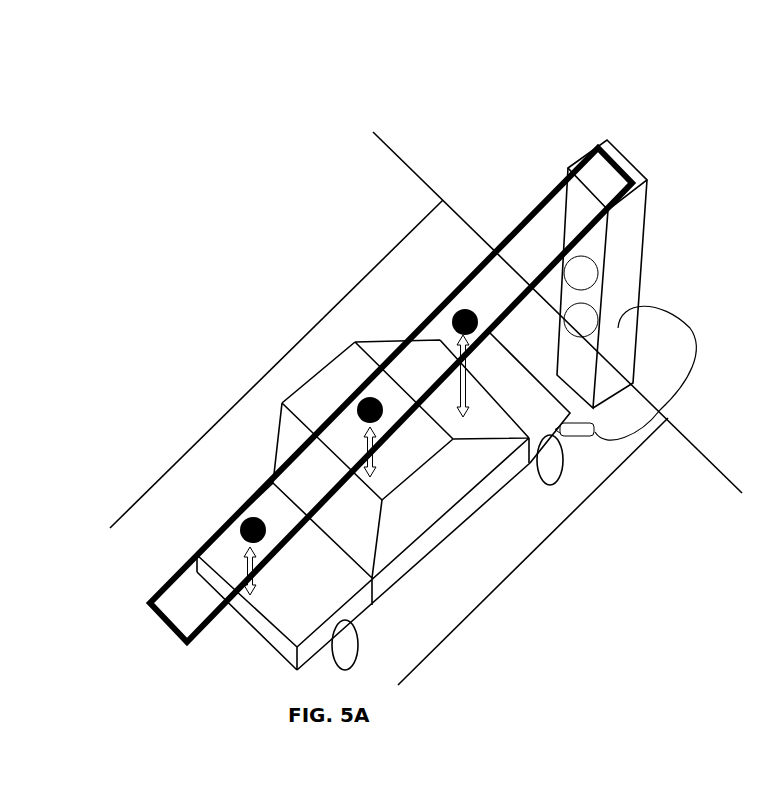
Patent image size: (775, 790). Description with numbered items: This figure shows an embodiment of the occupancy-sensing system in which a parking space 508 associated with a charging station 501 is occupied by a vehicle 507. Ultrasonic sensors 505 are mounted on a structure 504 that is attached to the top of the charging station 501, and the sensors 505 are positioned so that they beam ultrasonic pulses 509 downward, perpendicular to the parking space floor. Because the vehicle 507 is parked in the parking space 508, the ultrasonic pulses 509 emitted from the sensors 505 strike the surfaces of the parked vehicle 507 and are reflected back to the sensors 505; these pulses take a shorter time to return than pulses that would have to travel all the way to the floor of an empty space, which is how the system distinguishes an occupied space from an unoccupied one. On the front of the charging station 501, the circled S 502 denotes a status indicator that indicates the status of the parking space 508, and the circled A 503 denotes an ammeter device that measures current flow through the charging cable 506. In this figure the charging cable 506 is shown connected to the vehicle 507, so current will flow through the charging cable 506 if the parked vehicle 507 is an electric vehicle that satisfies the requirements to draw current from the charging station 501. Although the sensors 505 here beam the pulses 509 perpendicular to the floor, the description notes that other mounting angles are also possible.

The charging station 501 is at (568, 164).
The circled S status indicator 502 is at (570, 252).
The circled A ammeter device 503 is at (564, 307).
The structure 504 is at (474, 280).
The ultrasonic sensors 505 is at (446, 303).
The charging cable 506 is at (682, 328).
The vehicle 507 is at (363, 361).
The parking space 508 is at (120, 607).
The ultrasonic pulses 509 is at (471, 370).